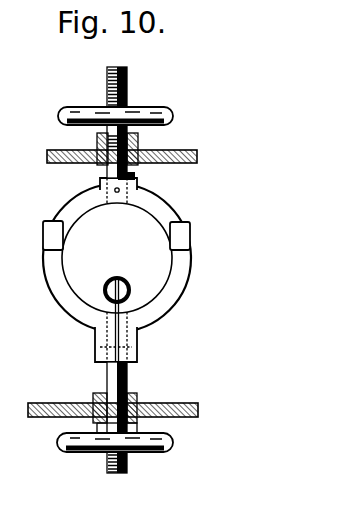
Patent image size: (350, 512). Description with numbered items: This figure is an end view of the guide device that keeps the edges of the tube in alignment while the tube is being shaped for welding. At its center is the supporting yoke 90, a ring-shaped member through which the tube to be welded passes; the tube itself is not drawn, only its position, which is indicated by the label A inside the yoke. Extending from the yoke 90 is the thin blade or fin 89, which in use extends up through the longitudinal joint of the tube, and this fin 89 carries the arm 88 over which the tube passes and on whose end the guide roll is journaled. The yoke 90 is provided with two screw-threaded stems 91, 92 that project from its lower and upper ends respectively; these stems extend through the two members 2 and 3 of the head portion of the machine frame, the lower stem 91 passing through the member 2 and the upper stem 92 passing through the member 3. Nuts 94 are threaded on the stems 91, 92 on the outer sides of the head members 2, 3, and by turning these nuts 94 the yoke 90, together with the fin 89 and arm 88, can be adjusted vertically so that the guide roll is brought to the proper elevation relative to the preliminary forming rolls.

The head member 2 is at (183, 418).
The head member 3 is at (197, 156).
The arm 88 is at (104, 290).
The blade or fin 89 is at (113, 307).
The supporting yoke 90 is at (152, 306).
The screw-threaded stem 91 is at (127, 380).
The screw-threaded stem 92 is at (137, 153).
The nut 94 is at (138, 113).
The axis point A is at (127, 283).